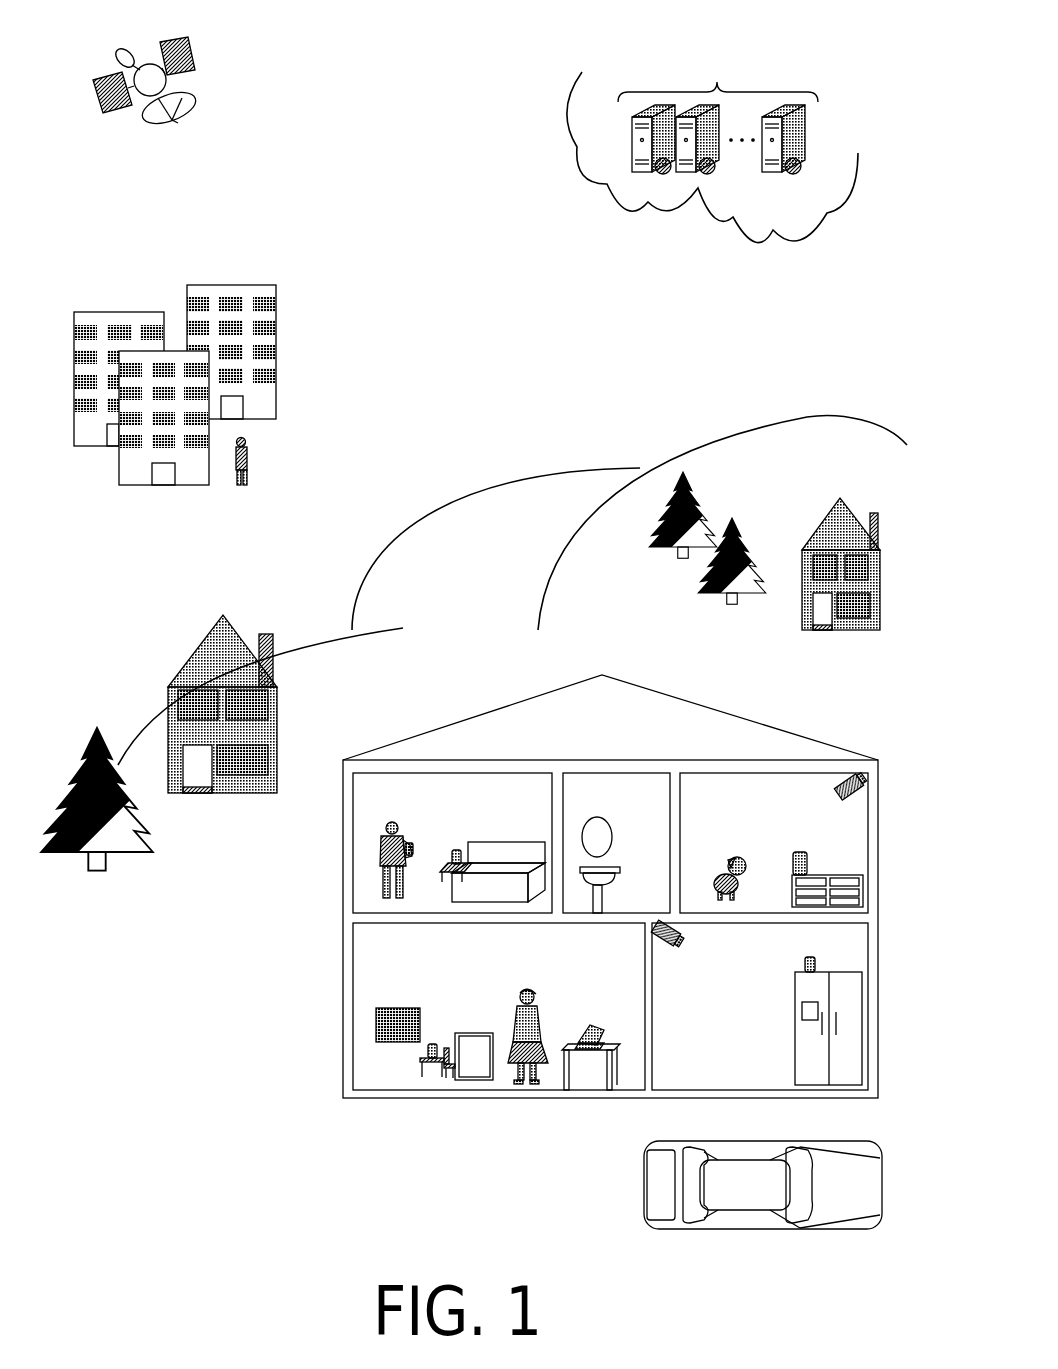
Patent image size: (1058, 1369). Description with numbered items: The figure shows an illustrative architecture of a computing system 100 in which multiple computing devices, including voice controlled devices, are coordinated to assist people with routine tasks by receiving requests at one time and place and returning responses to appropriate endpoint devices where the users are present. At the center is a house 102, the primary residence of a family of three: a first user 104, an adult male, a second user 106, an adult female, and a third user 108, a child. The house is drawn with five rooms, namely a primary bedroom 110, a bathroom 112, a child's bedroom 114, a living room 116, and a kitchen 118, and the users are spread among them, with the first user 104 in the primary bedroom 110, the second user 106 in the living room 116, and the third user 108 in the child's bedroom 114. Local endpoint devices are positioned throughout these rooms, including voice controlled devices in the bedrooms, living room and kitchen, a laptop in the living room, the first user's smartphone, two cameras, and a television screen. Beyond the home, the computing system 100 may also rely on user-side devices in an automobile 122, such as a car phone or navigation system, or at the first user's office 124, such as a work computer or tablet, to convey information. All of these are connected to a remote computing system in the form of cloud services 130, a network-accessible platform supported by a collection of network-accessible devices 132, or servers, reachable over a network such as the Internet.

The computing system 100 is at (369, 42).
The house 102 is at (528, 717).
The first user 104 is at (375, 860).
The second user 106 is at (522, 1017).
The third user 108 is at (732, 860).
The primary bedroom 110 is at (530, 806).
The bathroom 112 is at (657, 826).
The child's bedroom 114 is at (823, 810).
The living room 116 is at (573, 958).
The kitchen 118 is at (767, 978).
The automobile 122 is at (660, 1195).
The first user's office 124 is at (190, 470).
The cloud services 130 is at (688, 232).
The network-accessible devices 132 is at (815, 77).